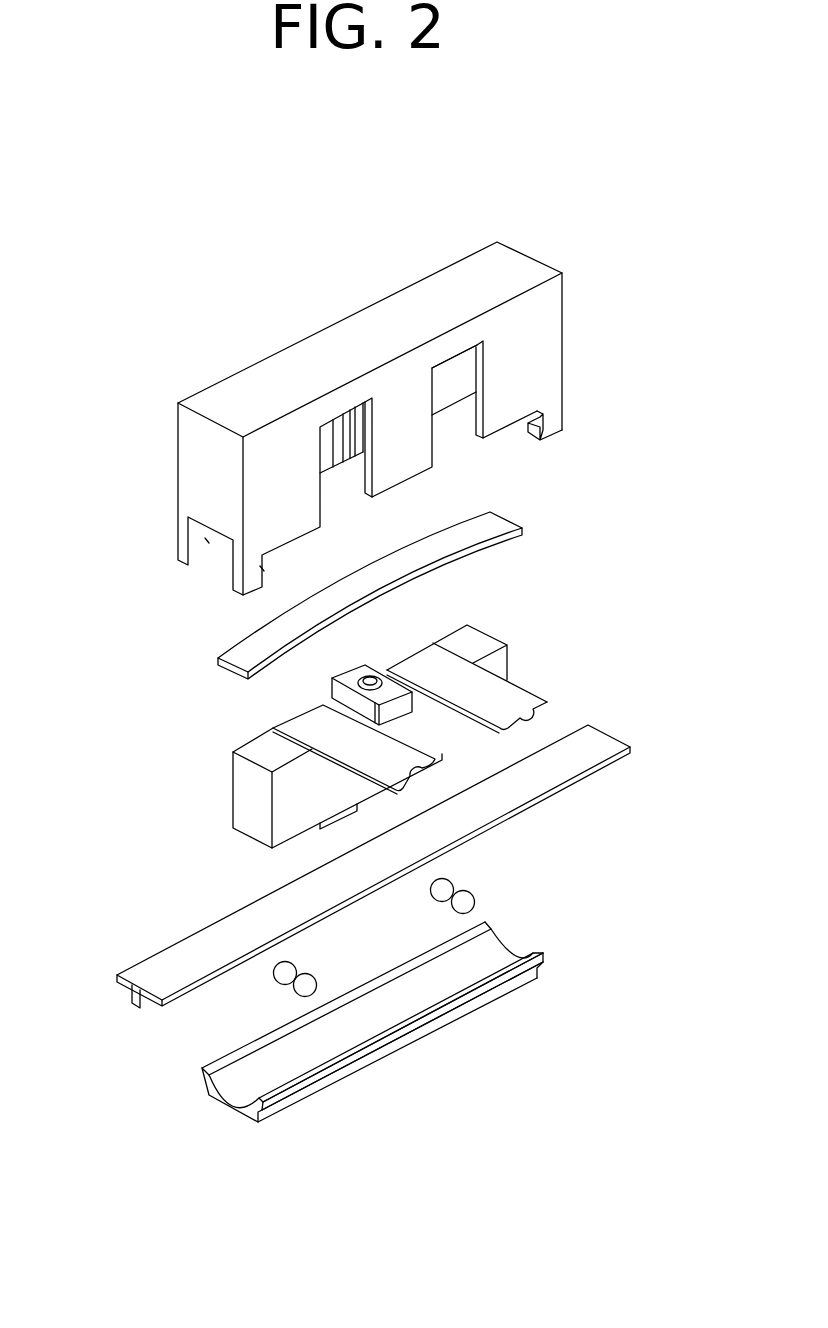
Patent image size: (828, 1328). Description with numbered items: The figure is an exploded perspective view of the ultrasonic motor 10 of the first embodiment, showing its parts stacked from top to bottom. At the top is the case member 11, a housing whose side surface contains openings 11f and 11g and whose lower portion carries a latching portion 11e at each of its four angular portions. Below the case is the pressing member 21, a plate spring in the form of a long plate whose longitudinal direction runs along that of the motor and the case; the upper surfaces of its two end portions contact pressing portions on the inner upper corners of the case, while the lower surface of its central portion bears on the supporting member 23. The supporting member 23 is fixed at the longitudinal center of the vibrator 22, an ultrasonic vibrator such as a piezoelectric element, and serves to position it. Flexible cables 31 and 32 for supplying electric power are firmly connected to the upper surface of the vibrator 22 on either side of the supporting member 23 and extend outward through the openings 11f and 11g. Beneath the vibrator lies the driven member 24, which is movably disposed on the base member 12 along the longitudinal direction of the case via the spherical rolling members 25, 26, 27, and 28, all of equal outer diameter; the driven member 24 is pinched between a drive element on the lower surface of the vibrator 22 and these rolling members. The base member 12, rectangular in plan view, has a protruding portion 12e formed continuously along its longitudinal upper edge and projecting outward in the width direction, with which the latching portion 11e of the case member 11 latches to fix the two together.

The ultrasonic motor 10 is at (408, 1313).
The case member 11 is at (492, 268).
The latching portion 11e is at (540, 414).
The opening 11f is at (353, 413).
The opening 11g is at (473, 363).
The base member 12 is at (435, 980).
The protruding portion 12e is at (303, 1082).
The pressing member 21 is at (494, 524).
The vibrator 22 is at (247, 800).
The supporting member 23 is at (367, 672).
The driven member 24 is at (615, 733).
The rolling member 25 is at (473, 895).
The rolling member 26 is at (450, 877).
The rolling member 27 is at (297, 992).
The rolling member 28 is at (273, 979).
The flexible cable 31 is at (312, 730).
The flexible cable 32 is at (493, 687).